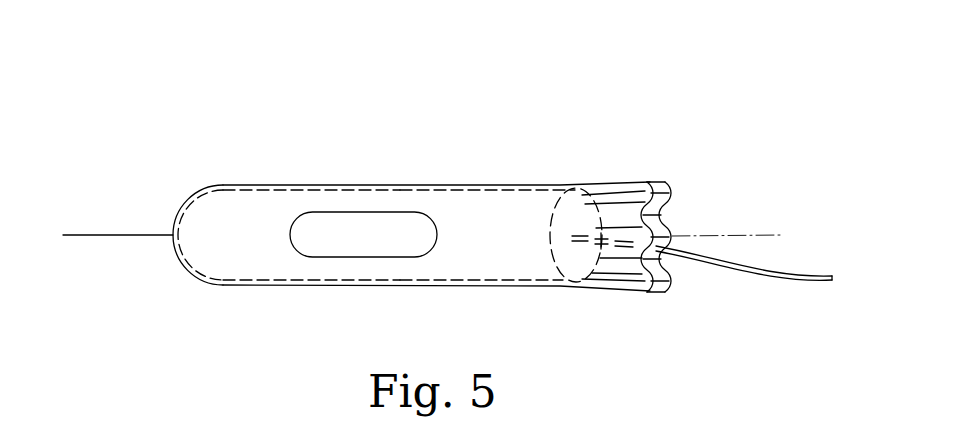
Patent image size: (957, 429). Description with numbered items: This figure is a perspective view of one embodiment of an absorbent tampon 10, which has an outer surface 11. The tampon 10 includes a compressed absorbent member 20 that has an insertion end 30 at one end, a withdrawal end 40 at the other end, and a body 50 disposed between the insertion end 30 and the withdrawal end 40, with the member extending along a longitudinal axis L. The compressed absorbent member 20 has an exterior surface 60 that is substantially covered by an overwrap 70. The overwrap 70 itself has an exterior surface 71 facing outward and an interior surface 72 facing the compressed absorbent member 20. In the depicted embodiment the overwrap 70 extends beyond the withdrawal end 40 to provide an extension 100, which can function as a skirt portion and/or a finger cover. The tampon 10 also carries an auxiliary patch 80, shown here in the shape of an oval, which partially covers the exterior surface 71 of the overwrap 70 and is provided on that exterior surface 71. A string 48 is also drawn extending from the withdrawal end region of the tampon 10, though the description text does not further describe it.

The absorbent tampon 10 is at (172, 107).
The longitudinal axis L is at (98, 235).
The interior surface 72 is at (195, 216).
The compressed absorbent member 20 is at (232, 212).
The exterior surface 60 is at (284, 212).
The overwrap 70 is at (466, 212).
The auxiliary patch 80 is at (365, 226).
The insertion end 30 is at (220, 248).
The exterior surface 71 is at (267, 250).
The outer surface 11 is at (307, 267).
The body 50 is at (357, 267).
The withdrawal end 40 is at (470, 288).
The extension 100 is at (612, 208).
The withdrawal string 48 is at (805, 273).